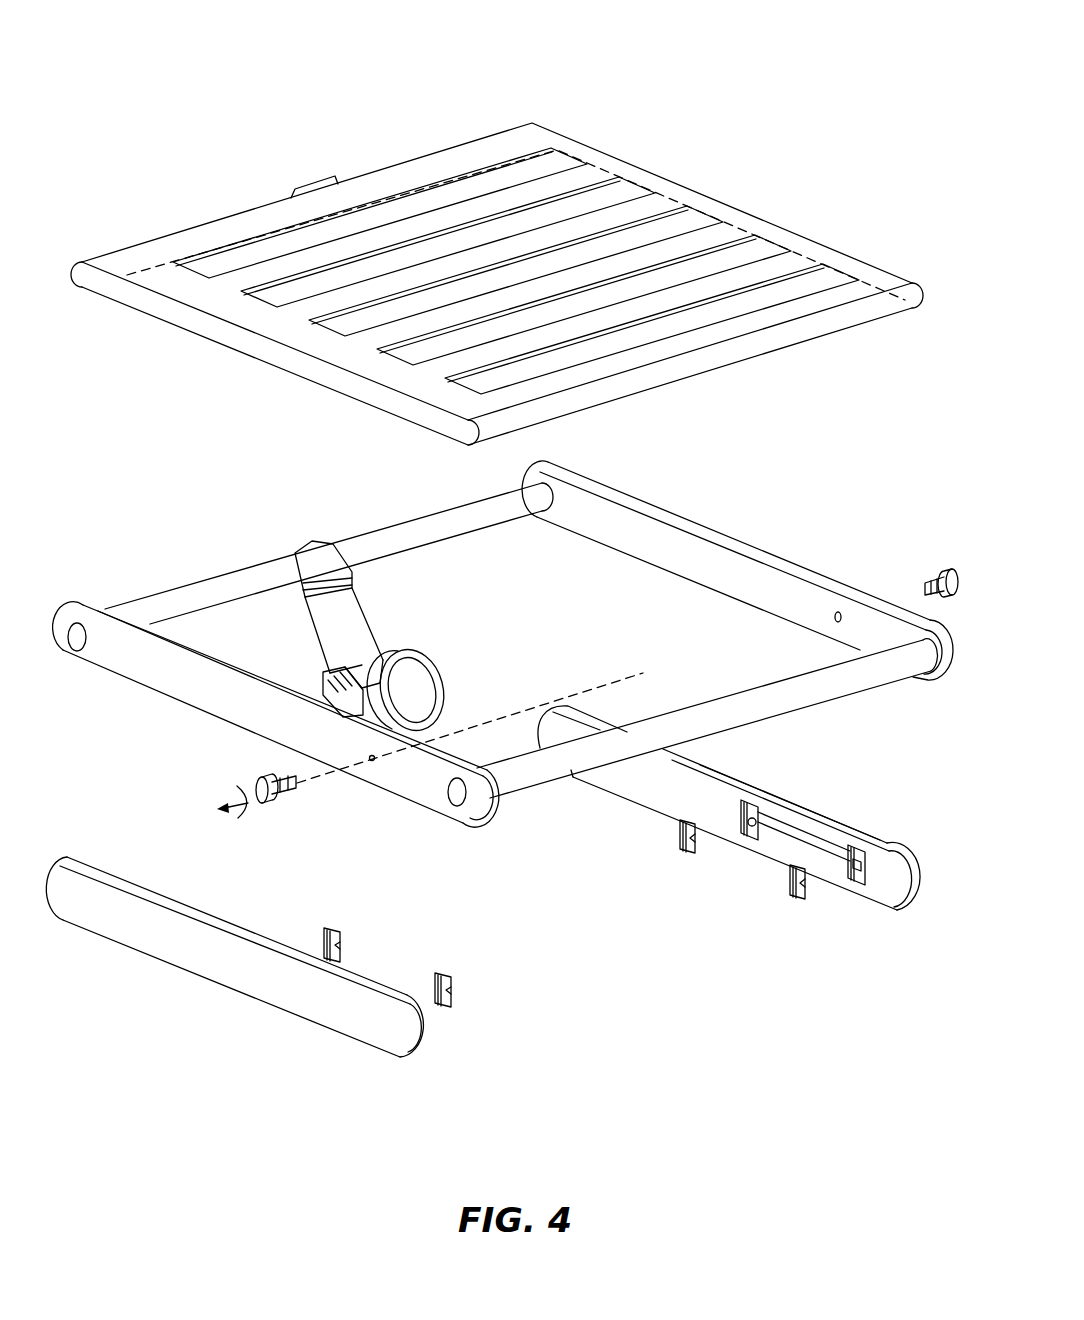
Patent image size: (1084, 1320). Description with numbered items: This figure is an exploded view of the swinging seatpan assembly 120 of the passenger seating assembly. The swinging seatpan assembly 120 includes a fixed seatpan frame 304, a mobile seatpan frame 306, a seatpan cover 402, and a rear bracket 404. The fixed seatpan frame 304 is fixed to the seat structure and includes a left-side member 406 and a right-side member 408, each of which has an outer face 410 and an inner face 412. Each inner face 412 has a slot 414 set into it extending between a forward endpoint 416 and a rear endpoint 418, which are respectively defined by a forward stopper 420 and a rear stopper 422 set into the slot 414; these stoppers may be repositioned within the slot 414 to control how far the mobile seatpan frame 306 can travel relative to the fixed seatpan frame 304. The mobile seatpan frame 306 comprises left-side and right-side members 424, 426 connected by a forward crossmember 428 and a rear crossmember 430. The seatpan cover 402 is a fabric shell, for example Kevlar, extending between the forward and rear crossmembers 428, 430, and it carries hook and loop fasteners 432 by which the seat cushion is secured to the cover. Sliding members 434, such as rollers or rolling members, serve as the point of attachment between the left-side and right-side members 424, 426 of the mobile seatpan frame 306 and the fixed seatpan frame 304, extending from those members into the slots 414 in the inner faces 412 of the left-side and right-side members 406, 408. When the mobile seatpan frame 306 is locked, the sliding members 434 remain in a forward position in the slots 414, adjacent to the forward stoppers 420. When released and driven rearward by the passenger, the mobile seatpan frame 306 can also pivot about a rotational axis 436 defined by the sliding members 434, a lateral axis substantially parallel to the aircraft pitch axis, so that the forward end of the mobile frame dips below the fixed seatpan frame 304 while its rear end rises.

The swinging seatpan assembly 120 is at (148, 67).
The fixed seatpan frame 304 is at (173, 1050).
The mobile seatpan frame 306 is at (143, 480).
The seatpan cover 402 is at (763, 117).
The rear bracket 404 is at (437, 677).
The left-side member 406 is at (803, 810).
The right-side member 408 is at (140, 893).
The outer face 410 is at (203, 955).
The inner face 412 is at (663, 777).
The slot 414 is at (790, 840).
The forward endpoint 416 is at (857, 857).
The rear endpoint 418 is at (757, 813).
The forward stopper 420 is at (797, 890).
The rear stopper 422 is at (677, 843).
The left-side member 424 is at (680, 550).
The right-side member 426 is at (175, 673).
The forward crossmember 428 is at (777, 695).
The rear crossmember 430 is at (413, 537).
The hook and loop fasteners 432 is at (587, 203).
The sliding members 434 is at (953, 567).
The rotational axis 436 is at (592, 690).